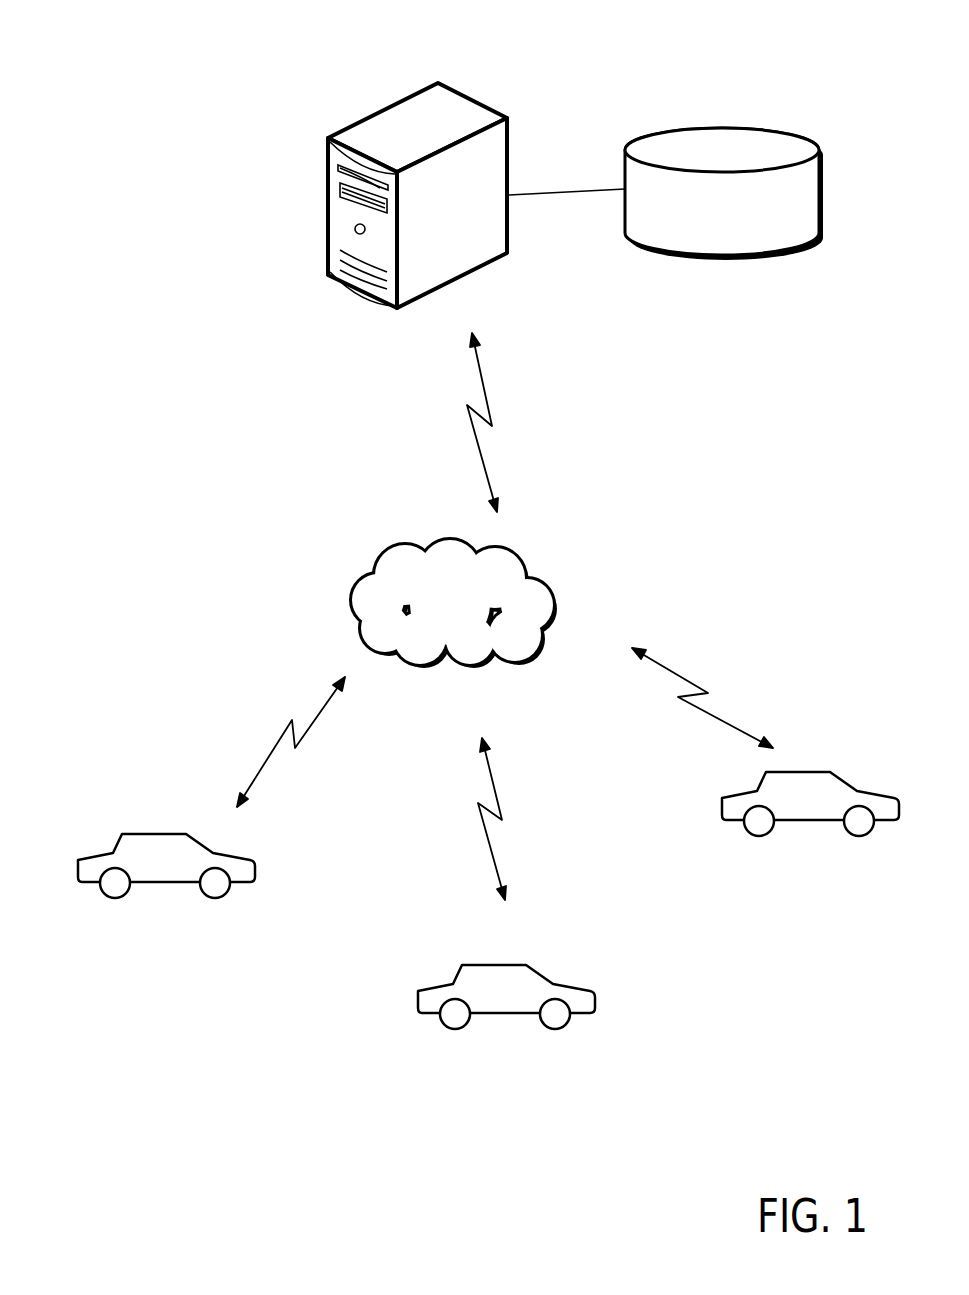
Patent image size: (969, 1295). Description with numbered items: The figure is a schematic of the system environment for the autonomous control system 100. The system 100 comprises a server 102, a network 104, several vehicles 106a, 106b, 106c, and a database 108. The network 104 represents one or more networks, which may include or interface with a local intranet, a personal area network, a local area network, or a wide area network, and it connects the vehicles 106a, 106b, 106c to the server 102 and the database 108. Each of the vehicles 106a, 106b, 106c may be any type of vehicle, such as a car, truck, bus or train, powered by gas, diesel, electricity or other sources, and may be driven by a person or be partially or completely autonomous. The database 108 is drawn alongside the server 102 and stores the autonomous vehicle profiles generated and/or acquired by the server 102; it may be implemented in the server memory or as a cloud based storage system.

The autonomous control system 100 is at (98, 64).
The server 102 is at (438, 82).
The network 104 is at (454, 604).
The vehicle 106a is at (166, 882).
The vehicle 106b is at (506, 1012).
The vehicle 106c is at (810, 819).
The database 108 is at (795, 135).